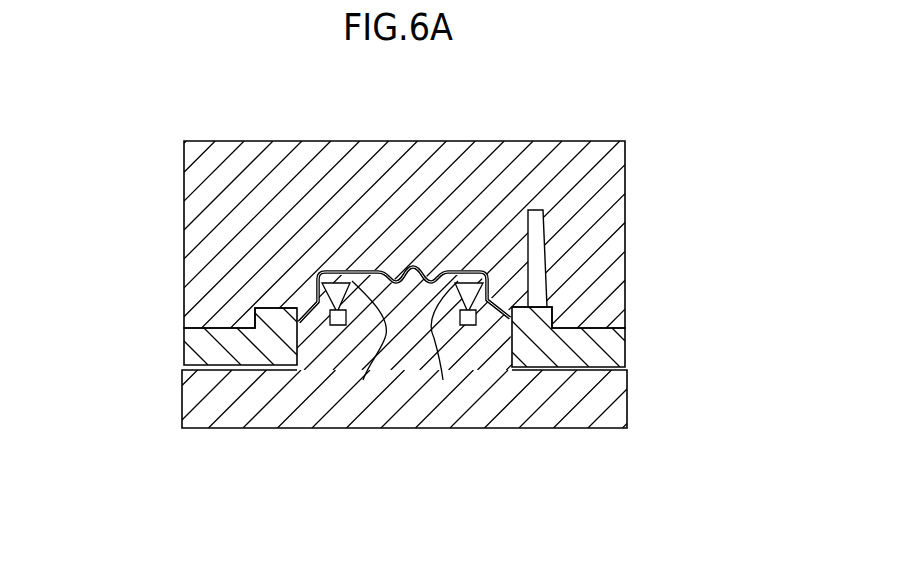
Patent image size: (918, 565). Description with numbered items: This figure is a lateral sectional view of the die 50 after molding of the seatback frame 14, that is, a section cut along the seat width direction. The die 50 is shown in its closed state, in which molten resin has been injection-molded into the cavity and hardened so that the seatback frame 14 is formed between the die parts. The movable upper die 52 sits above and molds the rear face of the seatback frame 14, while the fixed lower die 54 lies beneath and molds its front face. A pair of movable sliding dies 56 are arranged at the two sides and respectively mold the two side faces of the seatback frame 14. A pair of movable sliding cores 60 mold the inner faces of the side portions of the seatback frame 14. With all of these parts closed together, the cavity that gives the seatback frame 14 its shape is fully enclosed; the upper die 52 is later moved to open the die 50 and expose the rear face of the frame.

The seatback frame 14 is at (413, 264).
The die 50 is at (110, 154).
The upper die 52 is at (625, 200).
The lower die 54 is at (627, 398).
The sliding dies 56 is at (184, 347).
The sliding cores 60 is at (363, 380).